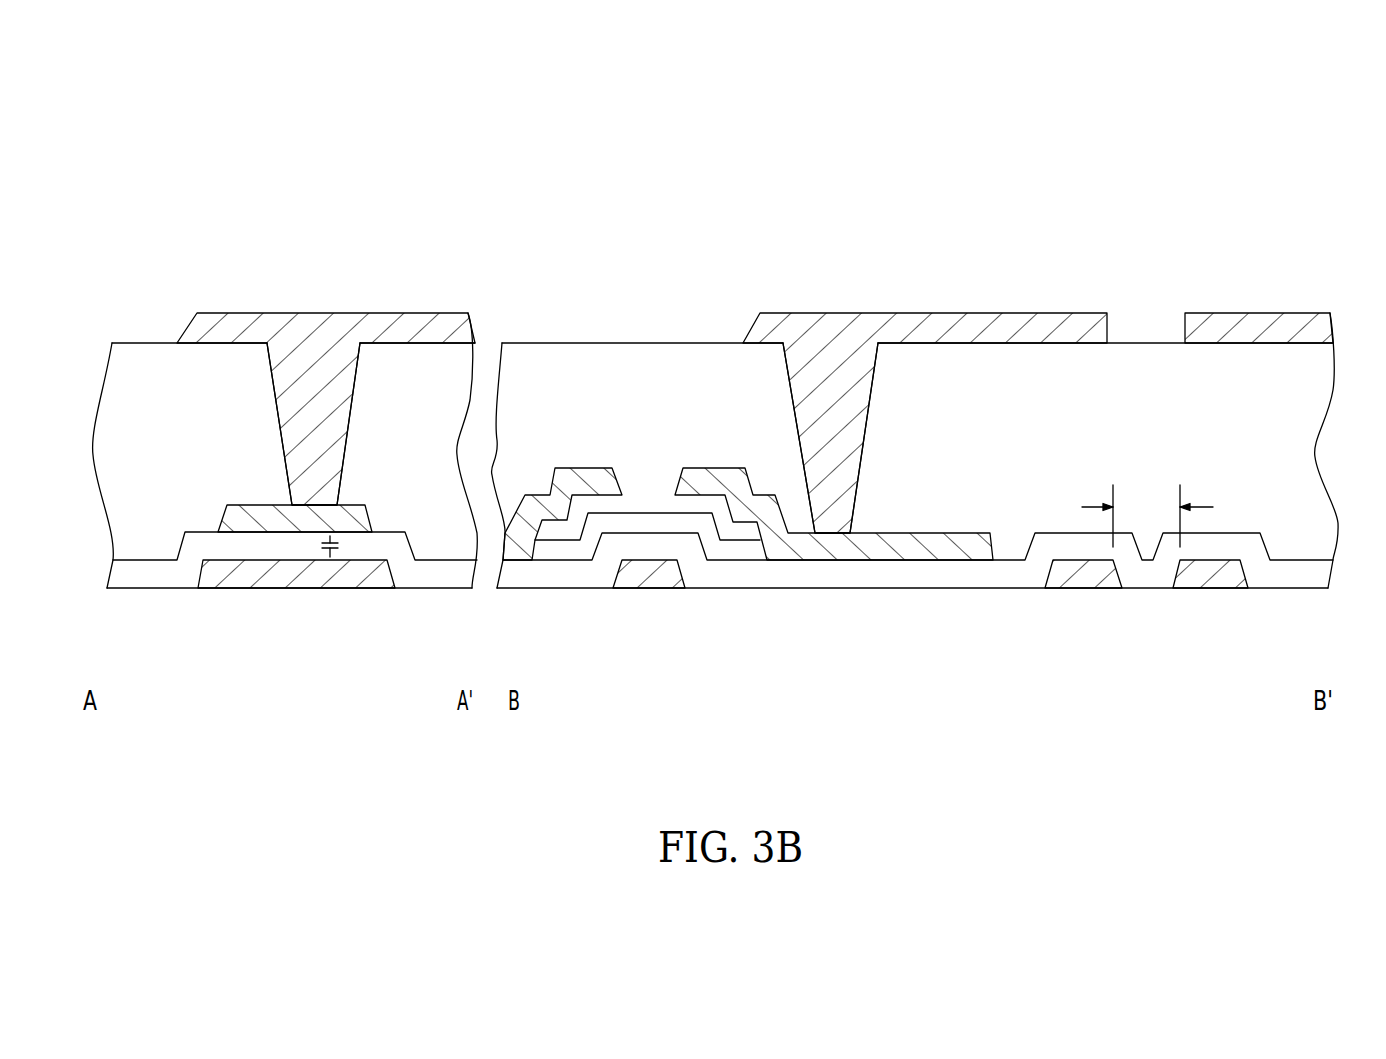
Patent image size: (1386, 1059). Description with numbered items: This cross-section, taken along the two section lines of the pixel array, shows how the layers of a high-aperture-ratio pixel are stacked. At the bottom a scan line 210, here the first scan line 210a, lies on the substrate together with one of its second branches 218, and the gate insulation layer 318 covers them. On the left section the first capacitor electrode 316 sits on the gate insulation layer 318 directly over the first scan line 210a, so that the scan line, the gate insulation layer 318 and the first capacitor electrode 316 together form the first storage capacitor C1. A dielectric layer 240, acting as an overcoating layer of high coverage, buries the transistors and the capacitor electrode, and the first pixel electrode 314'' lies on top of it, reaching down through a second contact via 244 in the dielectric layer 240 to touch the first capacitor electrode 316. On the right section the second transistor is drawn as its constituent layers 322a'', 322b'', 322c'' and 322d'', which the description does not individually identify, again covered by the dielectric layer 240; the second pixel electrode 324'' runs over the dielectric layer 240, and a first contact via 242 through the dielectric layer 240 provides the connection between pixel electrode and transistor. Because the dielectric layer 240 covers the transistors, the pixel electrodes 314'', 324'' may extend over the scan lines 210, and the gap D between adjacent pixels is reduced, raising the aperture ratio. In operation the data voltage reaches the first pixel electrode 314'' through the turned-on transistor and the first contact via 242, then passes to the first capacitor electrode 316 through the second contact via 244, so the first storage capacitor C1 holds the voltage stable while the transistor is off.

The dielectric layer 240 is at (148, 357).
The first pixel electrode 314'' is at (326, 361).
The second contact via 244 is at (289, 427).
The first capacitor electrode 316 is at (362, 515).
The gate insulation layer 318 is at (132, 573).
The scan line 210 is at (726, 628).
The first scan line 210a is at (267, 582).
The second branch 218 is at (1076, 573).
The first storage capacitor C1 is at (346, 549).
The semiconductor layer 322a'' is at (647, 464).
The gate electrode 322b'' is at (649, 624).
The drain electrode 322c'' is at (834, 570).
The source electrode 322d'' is at (562, 574).
The second pixel electrode 324'' is at (1038, 396).
The first contact via 242 is at (809, 435).
The gap D is at (1147, 513).